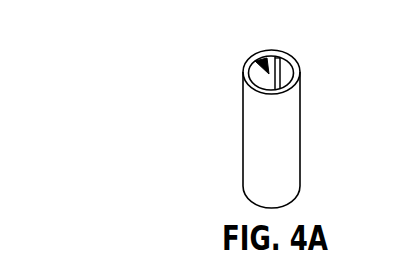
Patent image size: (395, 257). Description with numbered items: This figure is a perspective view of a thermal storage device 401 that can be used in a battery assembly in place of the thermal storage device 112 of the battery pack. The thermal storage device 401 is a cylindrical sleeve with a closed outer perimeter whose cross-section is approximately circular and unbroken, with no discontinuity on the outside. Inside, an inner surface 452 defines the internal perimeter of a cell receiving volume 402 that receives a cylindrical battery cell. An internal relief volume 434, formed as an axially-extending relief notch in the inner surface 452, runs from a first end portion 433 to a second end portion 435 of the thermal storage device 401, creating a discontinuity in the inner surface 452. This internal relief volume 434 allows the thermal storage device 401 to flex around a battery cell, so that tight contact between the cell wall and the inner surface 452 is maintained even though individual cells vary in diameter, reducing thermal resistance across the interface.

The thermal storage device 112 is at (112, 37).
The thermal storage device 401 is at (248, 140).
The cell receiving volume 402 is at (250, 59).
The first end portion 433 is at (296, 90).
The internal relief volume 434 is at (295, 62).
The second end portion 435 is at (297, 202).
The inner surface 452 is at (275, 53).